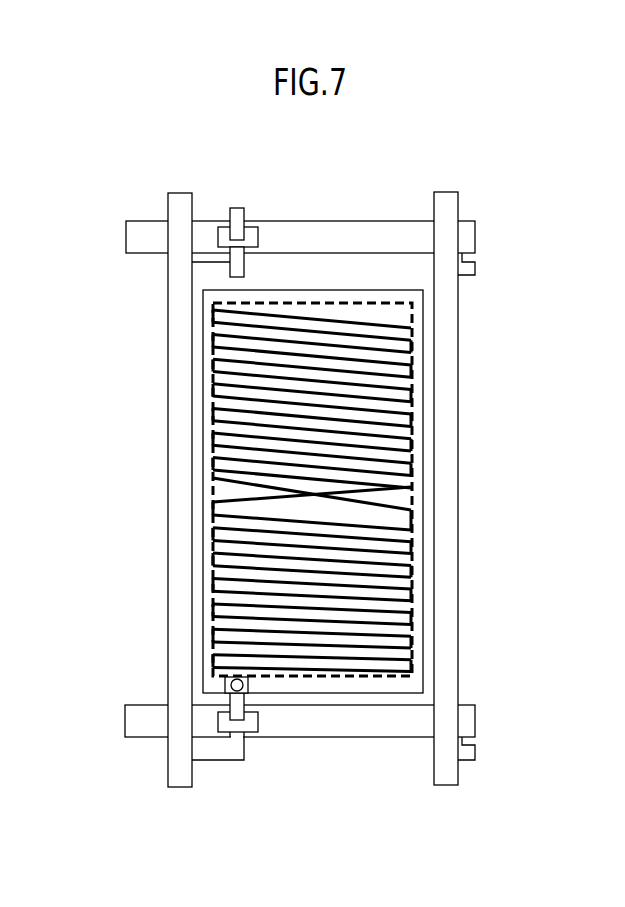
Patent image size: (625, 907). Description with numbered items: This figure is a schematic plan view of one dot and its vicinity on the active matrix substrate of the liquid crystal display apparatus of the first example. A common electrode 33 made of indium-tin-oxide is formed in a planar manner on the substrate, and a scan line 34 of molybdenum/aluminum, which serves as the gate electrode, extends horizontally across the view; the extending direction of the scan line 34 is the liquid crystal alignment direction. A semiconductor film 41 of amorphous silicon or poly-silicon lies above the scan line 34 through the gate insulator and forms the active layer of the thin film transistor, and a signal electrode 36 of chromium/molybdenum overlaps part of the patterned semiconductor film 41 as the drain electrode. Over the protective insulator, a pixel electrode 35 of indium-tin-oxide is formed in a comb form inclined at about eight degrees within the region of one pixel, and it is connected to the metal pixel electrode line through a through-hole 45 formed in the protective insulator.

The common electrode 33 is at (340, 410).
The scan line 34 is at (158, 718).
The pixel electrode 35 is at (381, 491).
The signal electrode 36 is at (132, 490).
The semiconductor film 41 is at (265, 753).
The through-hole 45 is at (222, 680).